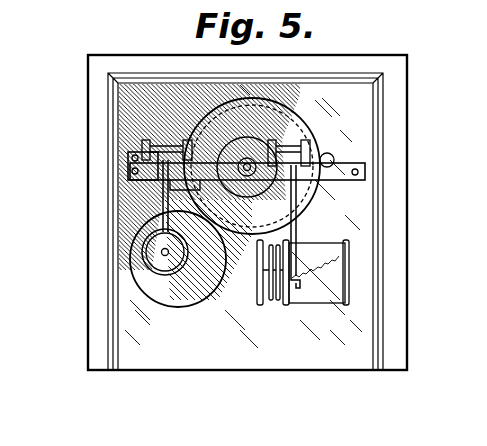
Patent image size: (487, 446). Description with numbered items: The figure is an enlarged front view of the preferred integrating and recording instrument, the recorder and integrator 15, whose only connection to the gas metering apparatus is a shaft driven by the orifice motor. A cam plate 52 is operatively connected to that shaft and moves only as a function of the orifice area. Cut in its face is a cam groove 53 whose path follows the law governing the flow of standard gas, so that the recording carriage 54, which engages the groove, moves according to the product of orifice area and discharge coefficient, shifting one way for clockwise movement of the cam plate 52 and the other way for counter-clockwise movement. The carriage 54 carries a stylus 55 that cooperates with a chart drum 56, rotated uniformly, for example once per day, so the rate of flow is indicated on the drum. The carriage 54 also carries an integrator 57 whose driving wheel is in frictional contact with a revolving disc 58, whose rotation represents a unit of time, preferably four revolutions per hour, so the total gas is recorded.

The recorder and integrator 15 is at (130, 158).
The cam plate 52 is at (305, 131).
The cam groove 53 is at (272, 113).
The recording carriage 54 is at (305, 148).
The stylus 55 is at (293, 229).
The chart drum 56 is at (337, 278).
The integrator 57 is at (162, 212).
The revolving disc 58 is at (143, 285).